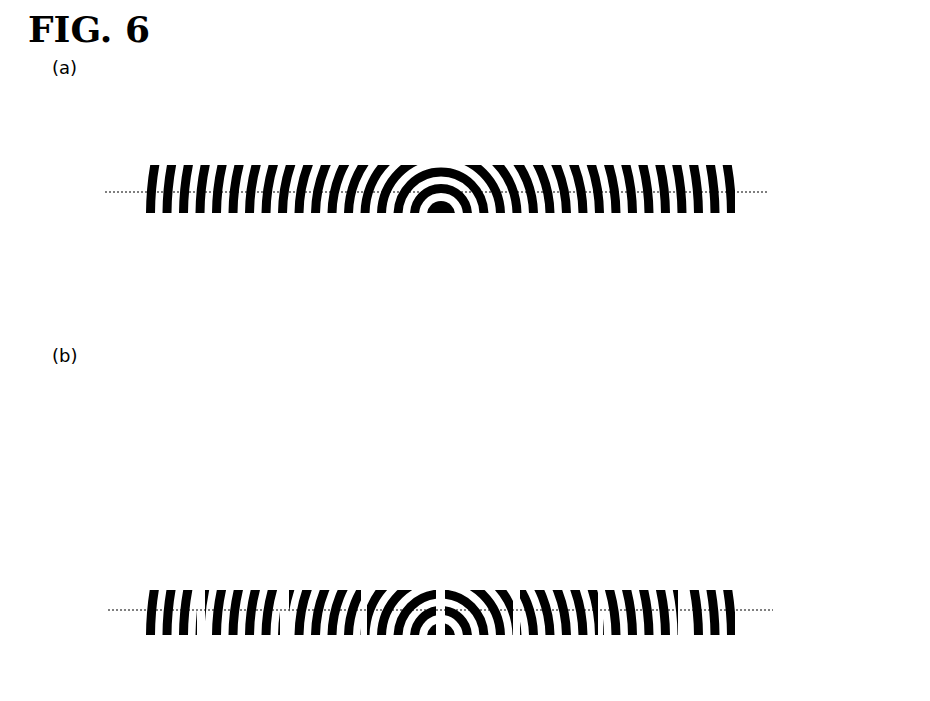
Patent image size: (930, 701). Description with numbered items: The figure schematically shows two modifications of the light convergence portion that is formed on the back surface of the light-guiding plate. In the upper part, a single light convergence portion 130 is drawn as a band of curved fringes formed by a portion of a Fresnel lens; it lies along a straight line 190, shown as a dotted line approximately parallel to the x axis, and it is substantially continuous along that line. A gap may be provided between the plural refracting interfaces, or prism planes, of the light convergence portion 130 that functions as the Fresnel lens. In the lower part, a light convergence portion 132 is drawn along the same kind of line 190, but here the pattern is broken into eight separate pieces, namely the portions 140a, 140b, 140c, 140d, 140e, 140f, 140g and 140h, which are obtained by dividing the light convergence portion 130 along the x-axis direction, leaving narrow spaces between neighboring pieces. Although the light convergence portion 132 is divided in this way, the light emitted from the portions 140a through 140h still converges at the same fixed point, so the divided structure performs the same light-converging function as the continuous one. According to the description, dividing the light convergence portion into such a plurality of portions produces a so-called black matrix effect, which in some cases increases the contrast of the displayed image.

The light convergence portion 130 is at (767, 120).
The light convergence portion 132 is at (752, 437).
The line 190 is at (459, 402).
The portion 140a is at (173, 578).
The portion 140b is at (248, 578).
The portion 140c is at (324, 578).
The portion 140d is at (401, 578).
The portion 140e is at (480, 578).
The portion 140f is at (557, 578).
The portion 140g is at (632, 578).
The portion 140h is at (709, 578).